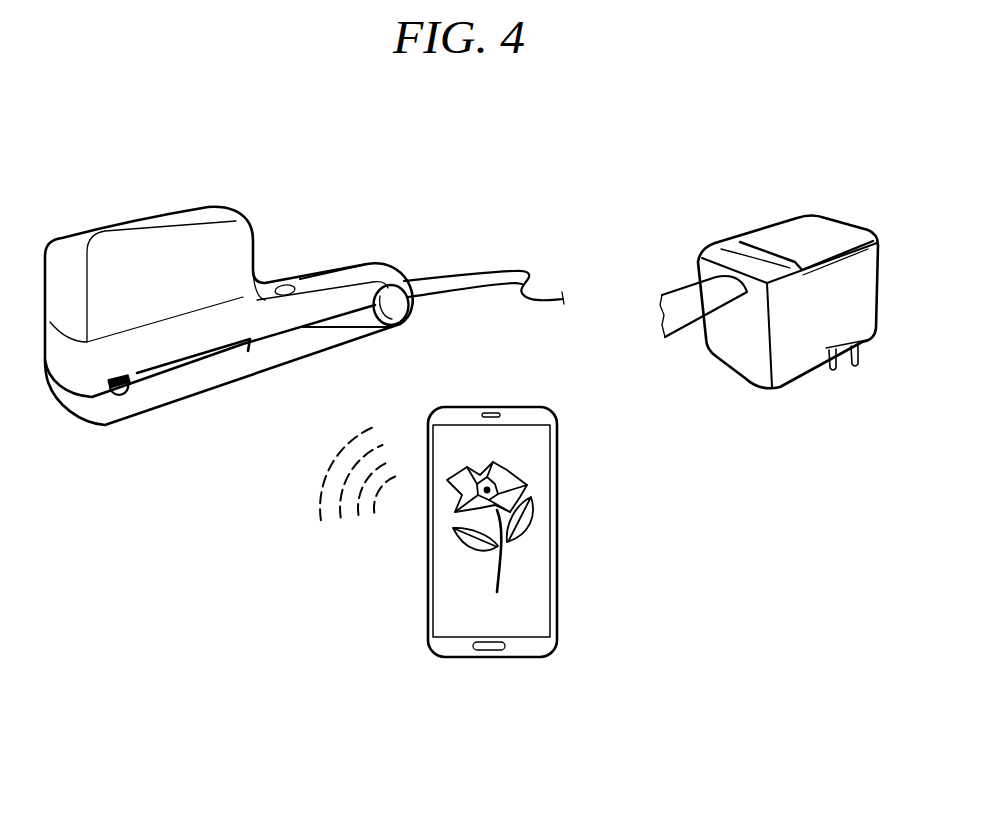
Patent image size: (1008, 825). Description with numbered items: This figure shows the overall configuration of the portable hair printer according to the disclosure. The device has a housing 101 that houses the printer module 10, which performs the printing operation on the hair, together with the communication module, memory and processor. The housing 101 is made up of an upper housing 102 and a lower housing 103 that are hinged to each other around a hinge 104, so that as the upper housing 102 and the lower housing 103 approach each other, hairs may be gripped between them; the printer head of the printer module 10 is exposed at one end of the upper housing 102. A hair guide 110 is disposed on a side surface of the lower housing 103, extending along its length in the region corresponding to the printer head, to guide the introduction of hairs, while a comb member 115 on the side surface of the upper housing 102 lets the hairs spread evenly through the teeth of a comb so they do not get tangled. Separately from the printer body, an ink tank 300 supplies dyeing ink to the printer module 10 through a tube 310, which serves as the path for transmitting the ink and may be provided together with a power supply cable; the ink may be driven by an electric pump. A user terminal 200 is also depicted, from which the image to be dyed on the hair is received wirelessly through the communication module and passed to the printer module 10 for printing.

The printer module 10 is at (238, 237).
The housing 101 is at (316, 243).
The upper housing 102 is at (354, 270).
The lower housing 103 is at (345, 327).
The hinge 104 is at (407, 309).
The hair guide 110 is at (183, 367).
The comb member 115 is at (120, 358).
The user terminal 200 is at (558, 512).
The ink tank 300 is at (836, 200).
The tube 310 is at (500, 277).